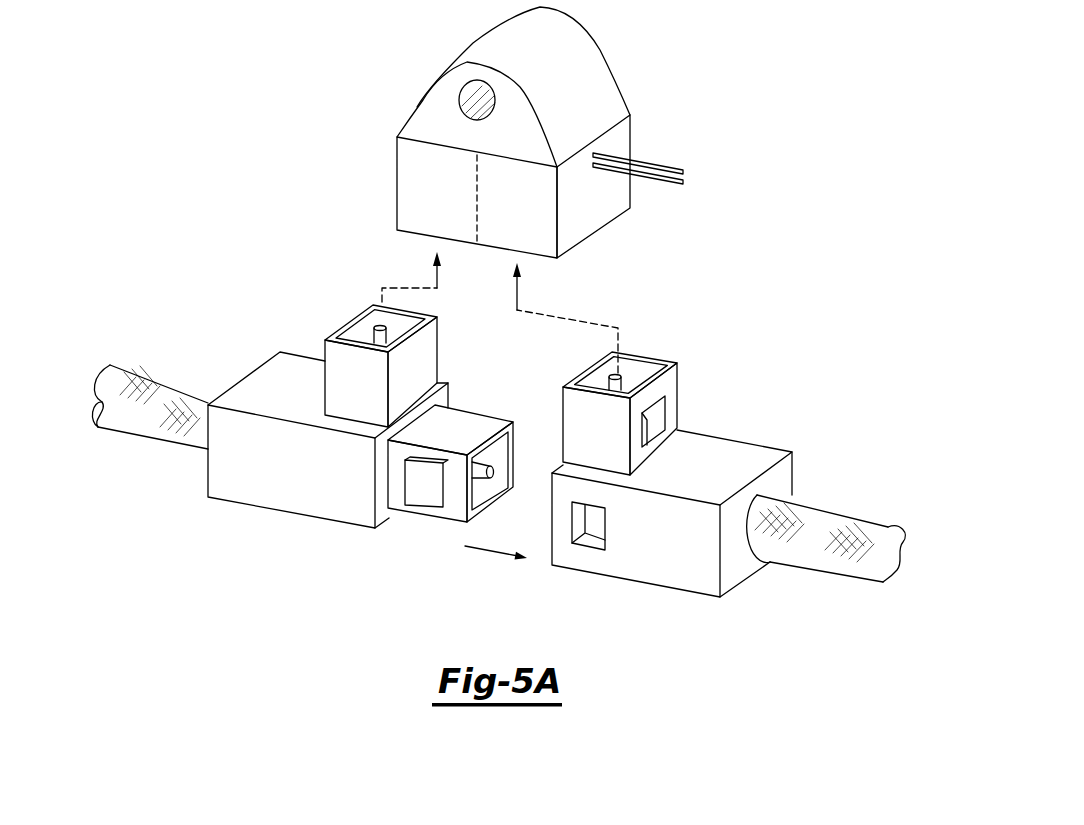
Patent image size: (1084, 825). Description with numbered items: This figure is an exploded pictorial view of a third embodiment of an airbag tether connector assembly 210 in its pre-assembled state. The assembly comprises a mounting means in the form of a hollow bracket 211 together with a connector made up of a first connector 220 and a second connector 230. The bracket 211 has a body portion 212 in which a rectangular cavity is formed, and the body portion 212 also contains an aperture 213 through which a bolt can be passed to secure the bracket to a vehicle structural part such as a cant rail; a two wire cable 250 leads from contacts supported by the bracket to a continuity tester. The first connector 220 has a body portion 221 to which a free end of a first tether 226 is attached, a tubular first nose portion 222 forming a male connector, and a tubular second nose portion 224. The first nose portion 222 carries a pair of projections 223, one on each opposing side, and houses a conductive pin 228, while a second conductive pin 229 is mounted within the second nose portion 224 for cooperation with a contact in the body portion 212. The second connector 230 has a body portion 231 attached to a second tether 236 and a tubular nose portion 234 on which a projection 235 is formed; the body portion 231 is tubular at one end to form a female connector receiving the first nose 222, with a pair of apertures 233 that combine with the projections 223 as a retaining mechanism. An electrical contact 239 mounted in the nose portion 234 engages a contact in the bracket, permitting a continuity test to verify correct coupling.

The airbag tether connector assembly 210 is at (266, 182).
The hollow bracket 211 is at (598, 98).
The body portion 212 is at (420, 103).
The aperture 213 is at (486, 90).
The two wire cable 250 is at (652, 163).
The first connector 220 is at (224, 506).
The body portion 221 is at (310, 497).
The first nose portion 222 is at (453, 525).
The projections 223 is at (430, 492).
The second nose portion 224 is at (325, 377).
The first tether 226 is at (147, 437).
The conductive pin 228 is at (487, 472).
The conductive pin 229 is at (378, 330).
The second connector 230 is at (697, 611).
The body portion 231 is at (653, 565).
The apertures 233 is at (596, 543).
The tubular nose portion 234 is at (667, 383).
The projection 235 is at (660, 420).
The second tether 236 is at (832, 570).
The electrical contact 239 is at (619, 374).